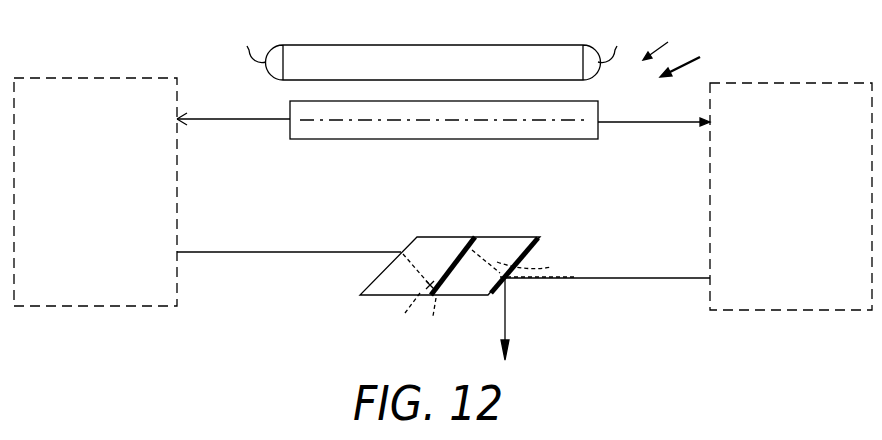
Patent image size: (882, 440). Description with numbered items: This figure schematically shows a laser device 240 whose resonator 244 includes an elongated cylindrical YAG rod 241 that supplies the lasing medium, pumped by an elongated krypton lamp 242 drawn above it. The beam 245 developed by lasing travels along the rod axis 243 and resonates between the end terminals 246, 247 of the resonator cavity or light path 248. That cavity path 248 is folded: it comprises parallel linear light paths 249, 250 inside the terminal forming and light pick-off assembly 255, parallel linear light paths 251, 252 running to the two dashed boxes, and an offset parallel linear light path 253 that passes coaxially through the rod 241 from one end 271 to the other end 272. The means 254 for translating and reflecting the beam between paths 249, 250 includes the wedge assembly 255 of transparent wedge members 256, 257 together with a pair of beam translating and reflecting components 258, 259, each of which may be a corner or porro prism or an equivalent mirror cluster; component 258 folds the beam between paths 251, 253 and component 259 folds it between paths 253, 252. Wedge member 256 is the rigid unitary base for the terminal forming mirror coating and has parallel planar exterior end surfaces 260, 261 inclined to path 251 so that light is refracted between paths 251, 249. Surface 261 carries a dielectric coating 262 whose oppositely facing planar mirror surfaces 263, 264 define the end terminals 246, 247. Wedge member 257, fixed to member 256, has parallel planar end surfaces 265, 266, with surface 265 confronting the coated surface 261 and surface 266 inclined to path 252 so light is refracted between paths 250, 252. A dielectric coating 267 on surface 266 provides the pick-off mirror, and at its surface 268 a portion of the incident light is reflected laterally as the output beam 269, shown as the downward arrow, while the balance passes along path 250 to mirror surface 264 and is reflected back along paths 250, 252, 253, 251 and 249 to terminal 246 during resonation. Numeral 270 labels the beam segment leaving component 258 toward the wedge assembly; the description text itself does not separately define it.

The laser device 240 is at (679, 36).
The YAG rod 241 is at (590, 101).
The krypton lamp 242 is at (385, 45).
The rod axis 243 is at (385, 121).
The resonator 244 is at (704, 59).
The beam 245 is at (690, 125).
The end terminal 246 is at (422, 271).
The end terminal 247 is at (466, 281).
The resonator cavity light path 248 is at (358, 254).
The linear light path 249 is at (412, 279).
The linear light path 250 is at (570, 282).
The linear light path 251 is at (265, 252).
The linear light path 252 is at (693, 278).
The linear light path 253 is at (274, 121).
The beam translating and reflecting means 254 is at (139, 78).
The terminal forming and light pick-off assembly 255 is at (539, 237).
The transparent wedge member 256 is at (425, 237).
The transparent wedge member 257 is at (487, 237).
The beam translating and reflecting component 258 is at (78, 78).
The beam translating and reflecting component 259 is at (757, 83).
The planar exterior end surface 260 is at (412, 241).
The planar exterior end surface 261 is at (426, 323).
The dielectric coating 262 is at (447, 300).
The mirror surface 263 is at (469, 247).
The mirror surface 264 is at (478, 247).
The planar exterior end surface 265 is at (391, 310).
The planar exterior end surface 266 is at (544, 238).
The dielectric coating 267 is at (508, 297).
The pick-off surface 268 is at (530, 266).
The output beam 269 is at (507, 326).
The beam segment 270 is at (179, 252).
The path end 271 is at (179, 119).
The path end 272 is at (709, 121).